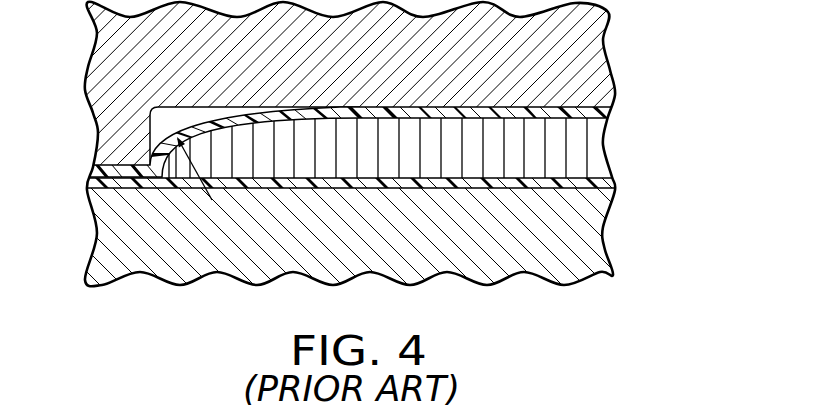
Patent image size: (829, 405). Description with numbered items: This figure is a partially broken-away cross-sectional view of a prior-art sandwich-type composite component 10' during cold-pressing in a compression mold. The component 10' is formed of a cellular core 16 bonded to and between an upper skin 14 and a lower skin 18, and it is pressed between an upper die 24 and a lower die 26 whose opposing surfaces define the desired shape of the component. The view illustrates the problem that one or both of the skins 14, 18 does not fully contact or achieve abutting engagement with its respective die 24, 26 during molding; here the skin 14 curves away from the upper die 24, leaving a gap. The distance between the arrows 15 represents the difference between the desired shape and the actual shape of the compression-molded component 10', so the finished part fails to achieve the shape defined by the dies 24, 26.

The compression-molded composite component 10' is at (715, 95).
The skin 14 is at (613, 110).
The arrows 15 is at (157, 108).
The cellular core 16 is at (605, 145).
The skin 18 is at (612, 182).
The upper die 24 is at (610, 57).
The lower die 26 is at (610, 235).